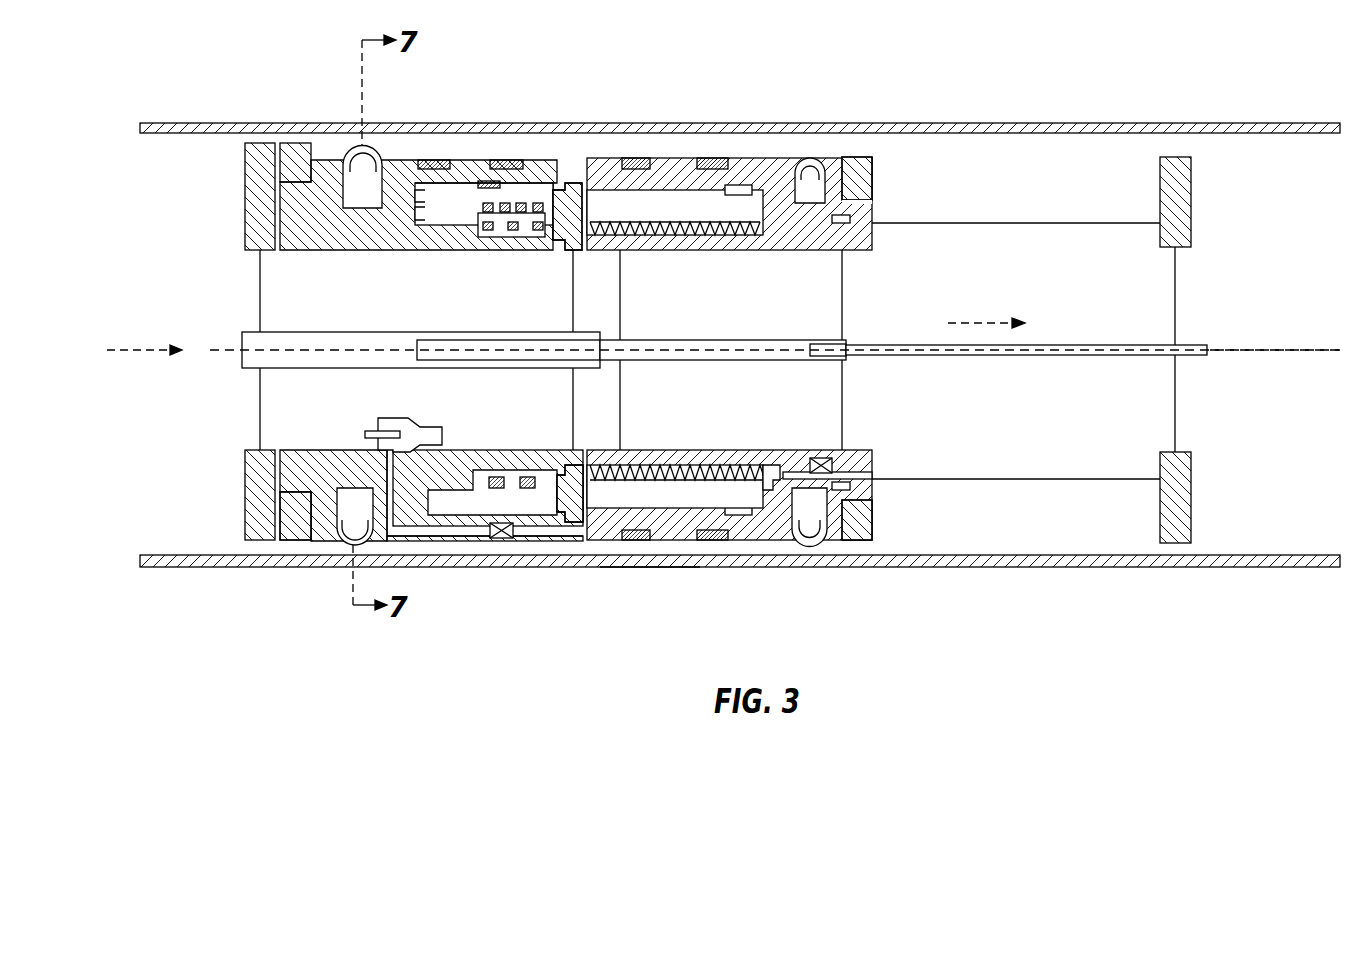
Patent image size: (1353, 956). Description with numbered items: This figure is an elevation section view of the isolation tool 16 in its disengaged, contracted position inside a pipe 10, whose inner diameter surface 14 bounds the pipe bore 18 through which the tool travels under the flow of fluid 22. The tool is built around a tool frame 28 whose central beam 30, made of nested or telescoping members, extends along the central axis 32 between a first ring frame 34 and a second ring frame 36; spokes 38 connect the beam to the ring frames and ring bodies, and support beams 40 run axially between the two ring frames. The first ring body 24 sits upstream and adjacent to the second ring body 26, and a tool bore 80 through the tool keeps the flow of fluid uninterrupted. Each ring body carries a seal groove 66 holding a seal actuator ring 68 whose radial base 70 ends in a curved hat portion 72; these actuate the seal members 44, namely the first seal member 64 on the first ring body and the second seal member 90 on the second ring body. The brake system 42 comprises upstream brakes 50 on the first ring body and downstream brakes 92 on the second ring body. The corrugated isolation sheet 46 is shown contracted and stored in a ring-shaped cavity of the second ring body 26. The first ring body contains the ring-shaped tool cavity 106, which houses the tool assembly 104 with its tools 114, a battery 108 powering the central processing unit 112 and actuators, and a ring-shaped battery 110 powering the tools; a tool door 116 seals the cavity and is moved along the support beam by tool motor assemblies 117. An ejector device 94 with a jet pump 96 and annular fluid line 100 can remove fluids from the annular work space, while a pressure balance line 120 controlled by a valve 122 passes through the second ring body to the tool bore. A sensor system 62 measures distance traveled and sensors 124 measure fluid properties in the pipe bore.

The pipe 10 is at (168, 567).
The inner diameter surface 14 is at (1045, 556).
The isolation tool 16 is at (650, 572).
The pipe bore 18 is at (1283, 410).
The flow of fluid 22 is at (985, 322).
The first ring body 24 is at (430, 543).
The second ring body 26 is at (752, 542).
The tool frame 28 is at (1058, 219).
The central beam 30 is at (1000, 358).
The central axis 32 is at (1262, 352).
The first ring frame 34 is at (245, 495).
The second ring frame 36 is at (1192, 204).
The spokes 38 is at (260, 300).
The support beams 40 is at (946, 219).
The brake system 42 is at (862, 158).
The seal members 44 is at (812, 158).
The isolation sheet 46 is at (700, 480).
The upstream brakes 50 is at (297, 143).
The sensor system 62 is at (523, 160).
The first seal member 64 is at (372, 148).
The seal groove 66 is at (345, 180).
The seal actuator ring 68 is at (350, 510).
The base 70 is at (368, 184).
The hat portion 72 is at (347, 546).
The tool bore 80 is at (428, 320).
The second seal member 90 is at (810, 548).
The downstream brakes 92 is at (862, 542).
The ejector device 94 is at (424, 419).
The jet pump 96 is at (395, 417).
The annular fluid line 100 is at (540, 535).
The tool assembly 104 is at (533, 196).
The tool cavity 106 is at (455, 184).
The battery 108 is at (418, 212).
The battery 110 is at (492, 215).
The central processing unit 112 is at (418, 196).
The tools 114 is at (580, 250).
The tool door 116 is at (588, 492).
The tool motor assemblies 117 is at (512, 232).
The pressure balance line 120 is at (778, 468).
The valve 122 is at (818, 458).
The sensors 124 is at (490, 180).